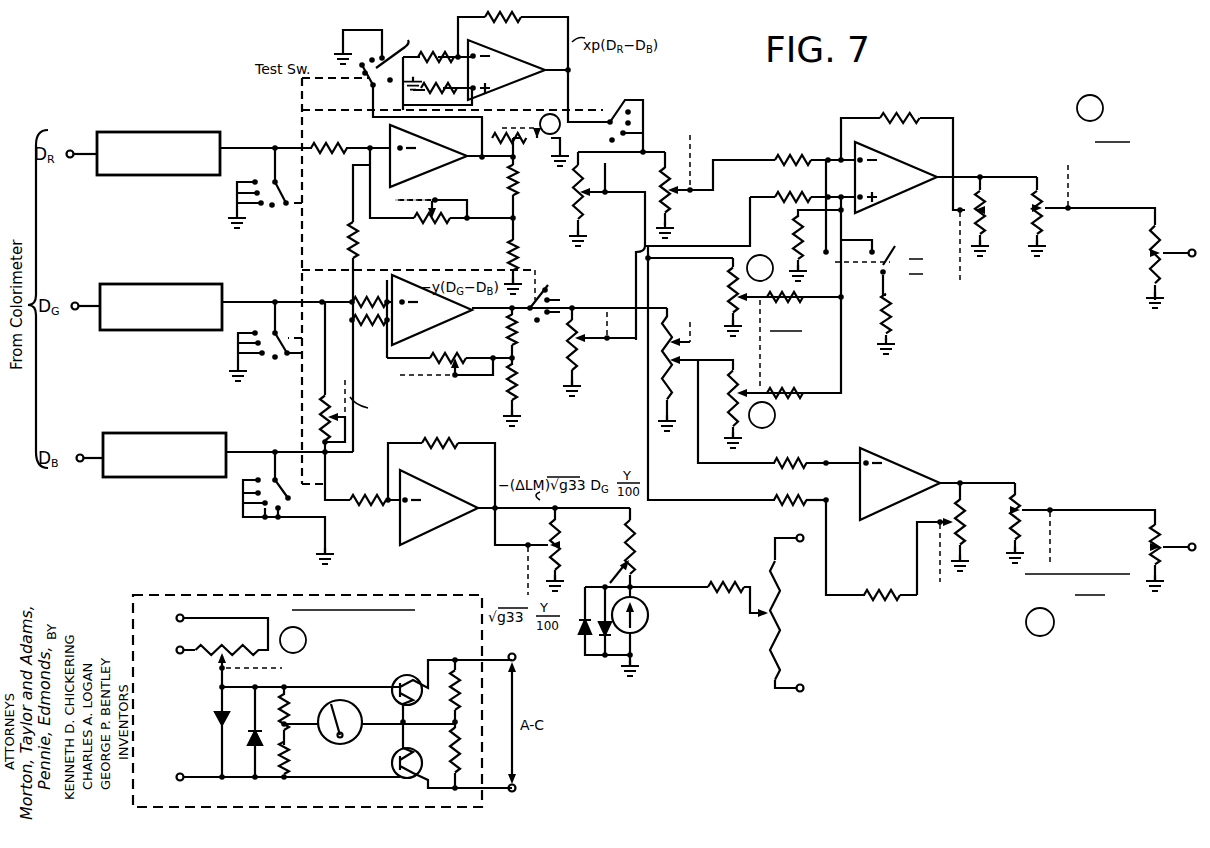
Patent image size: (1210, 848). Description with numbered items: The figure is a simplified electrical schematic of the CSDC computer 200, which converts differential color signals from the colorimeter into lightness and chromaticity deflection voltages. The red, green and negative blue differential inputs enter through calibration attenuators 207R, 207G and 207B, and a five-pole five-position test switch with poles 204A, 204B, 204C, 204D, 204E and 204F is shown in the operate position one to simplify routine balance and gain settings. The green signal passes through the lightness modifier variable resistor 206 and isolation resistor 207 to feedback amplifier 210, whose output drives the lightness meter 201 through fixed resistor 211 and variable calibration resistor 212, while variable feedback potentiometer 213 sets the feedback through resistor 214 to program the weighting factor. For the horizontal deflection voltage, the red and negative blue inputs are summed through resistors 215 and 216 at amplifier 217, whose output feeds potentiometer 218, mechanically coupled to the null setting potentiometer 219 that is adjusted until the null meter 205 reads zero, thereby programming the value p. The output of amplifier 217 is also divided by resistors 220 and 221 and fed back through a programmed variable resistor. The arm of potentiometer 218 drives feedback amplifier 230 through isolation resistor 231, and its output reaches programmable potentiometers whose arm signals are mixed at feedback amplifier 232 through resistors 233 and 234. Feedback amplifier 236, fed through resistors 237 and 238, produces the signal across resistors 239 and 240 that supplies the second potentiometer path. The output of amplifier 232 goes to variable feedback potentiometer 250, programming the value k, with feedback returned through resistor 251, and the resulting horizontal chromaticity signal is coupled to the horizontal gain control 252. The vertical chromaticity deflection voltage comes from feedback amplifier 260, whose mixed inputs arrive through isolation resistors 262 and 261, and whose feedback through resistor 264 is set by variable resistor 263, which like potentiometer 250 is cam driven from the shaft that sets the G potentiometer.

The colorimeter signal processing circuit 200 is at (940, 676).
The lightness meter 201 is at (645, 630).
The test switch pole 204A is at (268, 465).
The test switch pole 204B is at (268, 315).
The test switch pole 204C is at (266, 160).
The test switch pole 204D is at (408, 90).
The test switch pole 204E is at (630, 100).
The selector switch 204F is at (555, 285).
The null meter 205 is at (356, 715).
The lightness modifier variable resistor 206 is at (318, 410).
The isolation resistor 207 is at (372, 496).
The calibration attenuator 207R is at (163, 131).
The calibration attenuator 207G is at (178, 268).
The calibration attenuator 207B is at (190, 418).
The feedback amplifier 210 is at (458, 500).
The fixed resistor 211 is at (642, 522).
The variable calibration resistor 212 is at (635, 575).
The variable feedback potentiometer 213 is at (565, 555).
The feedback resistor 214 is at (436, 440).
The summing resistor 215 is at (346, 242).
The summing resistor 216 is at (347, 145).
The amplifier 217 is at (440, 156).
The potentiometer 218 is at (528, 187).
The null setting potentiometer 219 is at (244, 646).
The divider resistor 220 is at (522, 197).
The divider resistor 221 is at (520, 258).
The feedback amplifier 230 is at (530, 47).
The isolation resistor 231 is at (418, 60).
The feedback amplifier 232 is at (912, 172).
The resistor 233 is at (800, 155).
The resistor 234 is at (802, 197).
The feedback amplifier 236 is at (440, 333).
The input resistor 237 is at (386, 296).
The input resistor 238 is at (372, 327).
The output resistor 239 is at (505, 330).
The output resistor 240 is at (522, 390).
The variable feedback potentiometer 250 is at (1000, 202).
The feedback resistor 251 is at (908, 115).
The horizontal gain control 252 is at (1145, 255).
The feedback amplifier 260 is at (912, 470).
The isolation resistor 261 is at (797, 460).
The isolation resistor 262 is at (788, 496).
The variable resistor 263 is at (944, 520).
The feedback resistor 264 is at (897, 592).